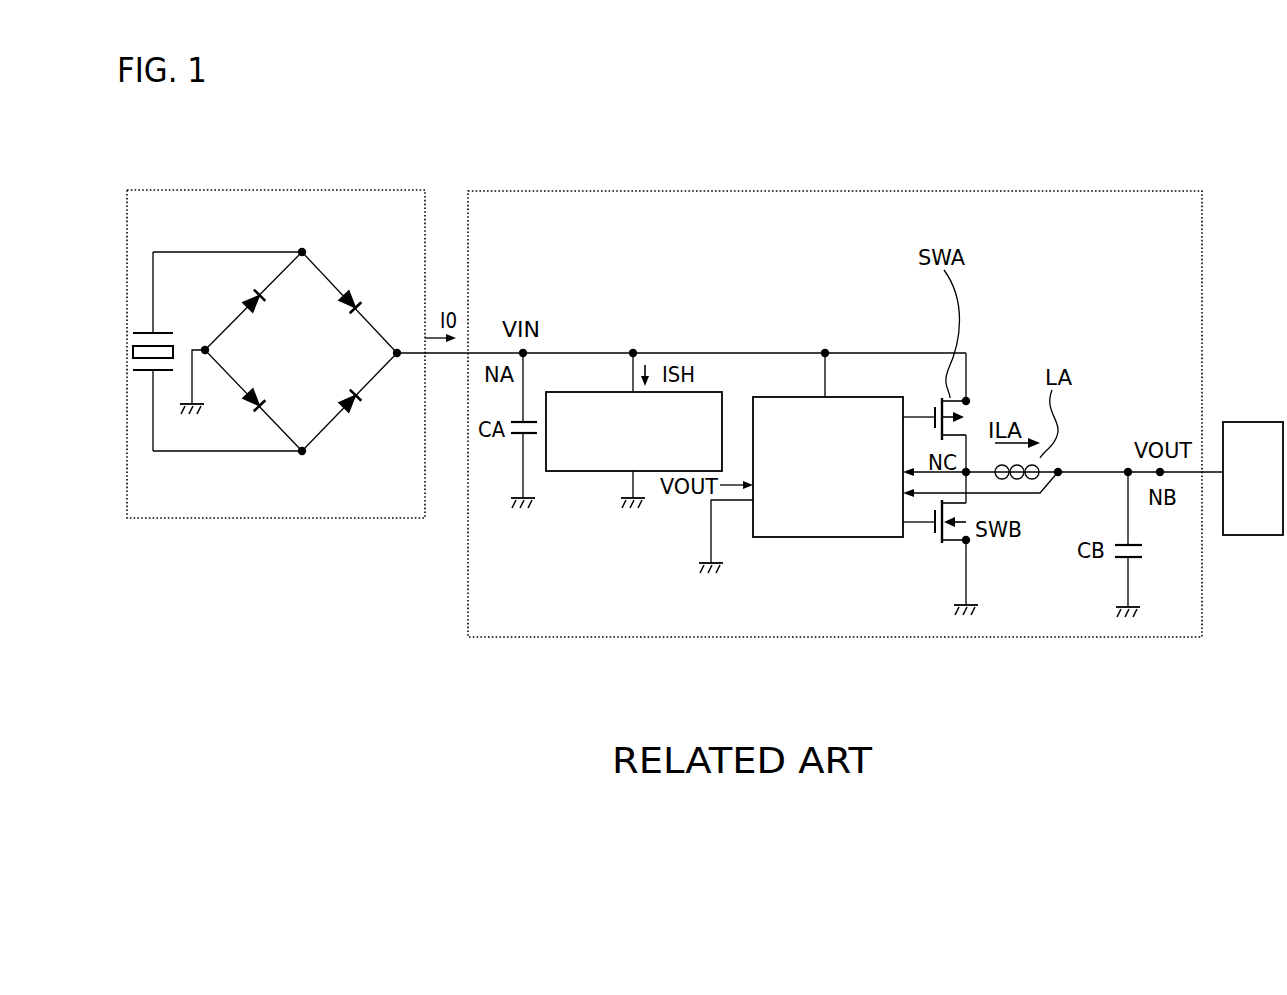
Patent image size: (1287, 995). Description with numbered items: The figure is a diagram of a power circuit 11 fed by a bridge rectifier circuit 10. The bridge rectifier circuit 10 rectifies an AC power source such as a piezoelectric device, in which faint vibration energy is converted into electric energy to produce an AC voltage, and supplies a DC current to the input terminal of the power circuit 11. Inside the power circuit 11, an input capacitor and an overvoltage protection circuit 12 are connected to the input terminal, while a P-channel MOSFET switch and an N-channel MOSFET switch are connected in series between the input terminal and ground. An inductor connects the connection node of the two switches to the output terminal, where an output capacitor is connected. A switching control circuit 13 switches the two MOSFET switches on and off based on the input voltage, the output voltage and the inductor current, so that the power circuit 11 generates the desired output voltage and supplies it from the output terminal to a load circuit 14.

The bridge rectifier circuit 10 is at (231, 190).
The power circuit 11 is at (546, 190).
The overvoltage protection circuit 12 is at (573, 474).
The switching control circuit 13 is at (811, 540).
The load circuit 14 is at (1267, 420).